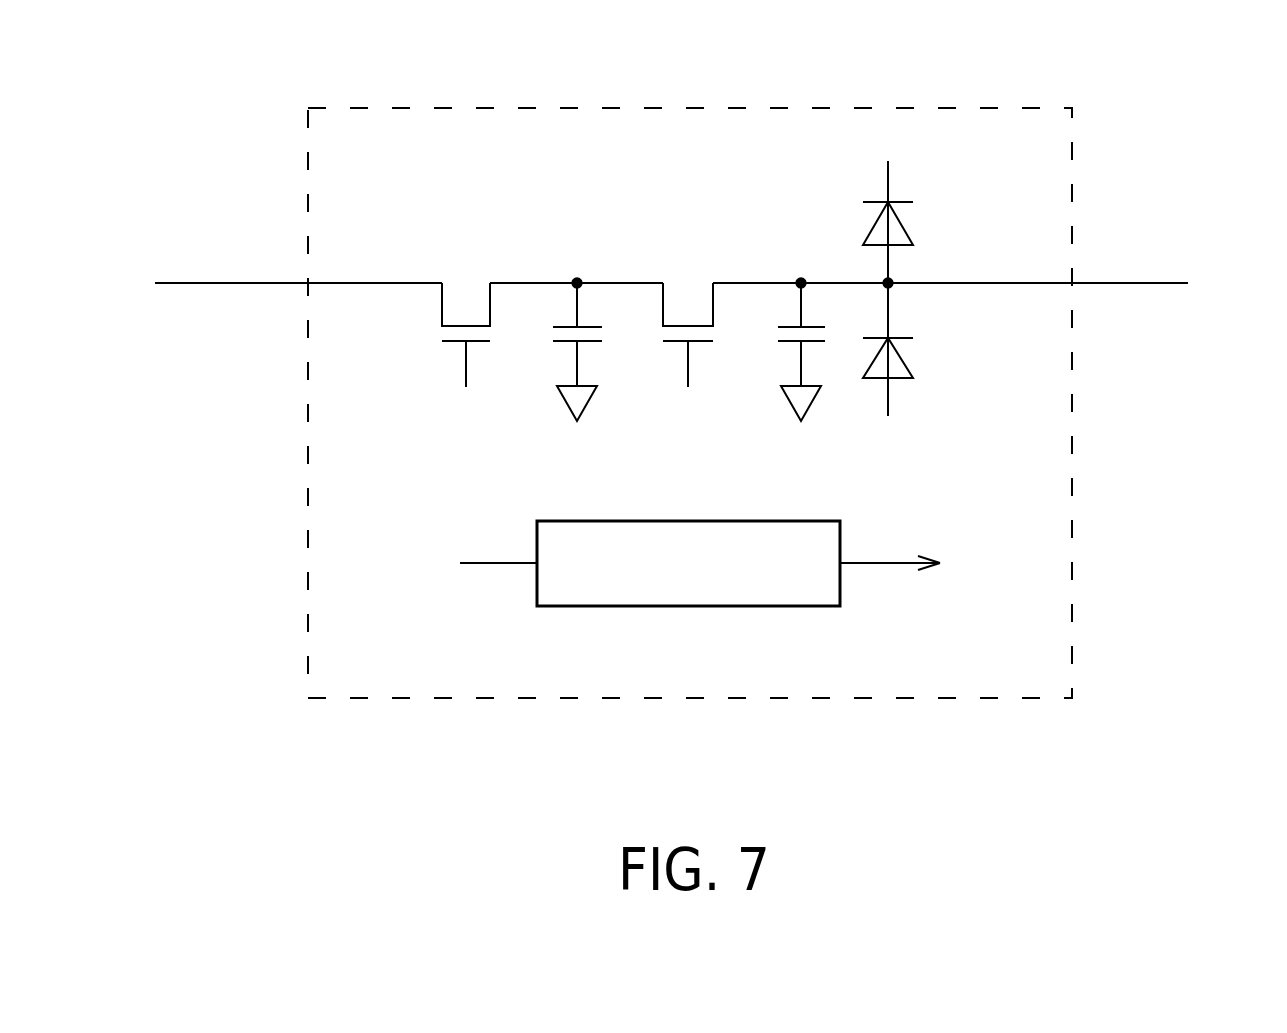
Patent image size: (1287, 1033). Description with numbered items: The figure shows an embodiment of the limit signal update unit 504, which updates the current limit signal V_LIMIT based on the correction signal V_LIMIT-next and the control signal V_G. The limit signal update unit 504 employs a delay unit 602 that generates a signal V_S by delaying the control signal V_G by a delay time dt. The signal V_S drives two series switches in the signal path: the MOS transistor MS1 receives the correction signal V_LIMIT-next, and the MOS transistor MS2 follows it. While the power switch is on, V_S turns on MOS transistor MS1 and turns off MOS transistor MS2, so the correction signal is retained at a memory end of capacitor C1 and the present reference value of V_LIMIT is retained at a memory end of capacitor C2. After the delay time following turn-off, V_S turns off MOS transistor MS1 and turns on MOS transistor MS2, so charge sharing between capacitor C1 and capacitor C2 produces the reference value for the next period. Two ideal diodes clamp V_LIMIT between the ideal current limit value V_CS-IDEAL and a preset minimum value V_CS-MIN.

The limit signal update unit 504 is at (683, 108).
The delay unit 602 is at (688, 606).
The MOS transistor MS1 is at (464, 315).
The MOS transistor MS2 is at (686, 315).
The capacitor C1 is at (557, 349).
The capacitor C2 is at (780, 349).